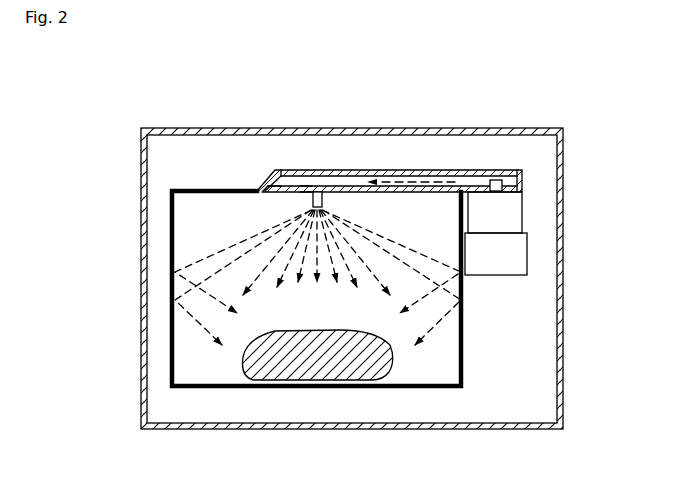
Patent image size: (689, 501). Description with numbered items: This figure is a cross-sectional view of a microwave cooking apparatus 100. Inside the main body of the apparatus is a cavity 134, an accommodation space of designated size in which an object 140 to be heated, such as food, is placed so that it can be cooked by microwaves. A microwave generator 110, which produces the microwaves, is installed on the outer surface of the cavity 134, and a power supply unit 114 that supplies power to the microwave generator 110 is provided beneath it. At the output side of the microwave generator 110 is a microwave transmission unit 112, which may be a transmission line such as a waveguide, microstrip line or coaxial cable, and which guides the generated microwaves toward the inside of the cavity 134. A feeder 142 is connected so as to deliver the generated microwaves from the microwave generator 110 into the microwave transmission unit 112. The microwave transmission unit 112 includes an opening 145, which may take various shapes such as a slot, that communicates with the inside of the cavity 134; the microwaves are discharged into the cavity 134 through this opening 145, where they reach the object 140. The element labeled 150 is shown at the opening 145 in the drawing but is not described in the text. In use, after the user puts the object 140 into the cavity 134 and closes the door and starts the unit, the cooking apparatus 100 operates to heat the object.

The cooking apparatus 100 is at (86, 69).
The microwave generator 110 is at (507, 213).
The microwave transmission unit 112 is at (443, 172).
The power supply unit 114 is at (500, 245).
The cavity 134 is at (172, 252).
The object to be heated 140 is at (358, 353).
The feeder 142 is at (497, 183).
The opening 145 is at (305, 192).
The steam nozzle 150 is at (317, 193).